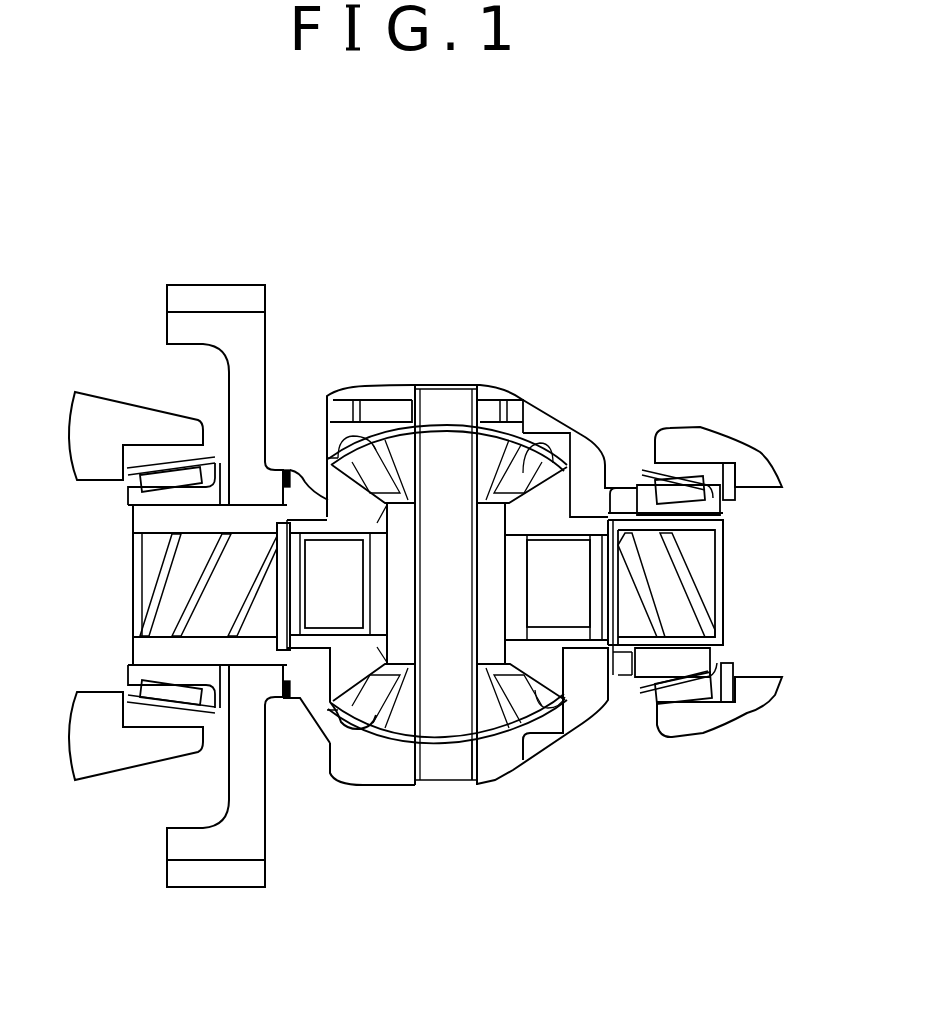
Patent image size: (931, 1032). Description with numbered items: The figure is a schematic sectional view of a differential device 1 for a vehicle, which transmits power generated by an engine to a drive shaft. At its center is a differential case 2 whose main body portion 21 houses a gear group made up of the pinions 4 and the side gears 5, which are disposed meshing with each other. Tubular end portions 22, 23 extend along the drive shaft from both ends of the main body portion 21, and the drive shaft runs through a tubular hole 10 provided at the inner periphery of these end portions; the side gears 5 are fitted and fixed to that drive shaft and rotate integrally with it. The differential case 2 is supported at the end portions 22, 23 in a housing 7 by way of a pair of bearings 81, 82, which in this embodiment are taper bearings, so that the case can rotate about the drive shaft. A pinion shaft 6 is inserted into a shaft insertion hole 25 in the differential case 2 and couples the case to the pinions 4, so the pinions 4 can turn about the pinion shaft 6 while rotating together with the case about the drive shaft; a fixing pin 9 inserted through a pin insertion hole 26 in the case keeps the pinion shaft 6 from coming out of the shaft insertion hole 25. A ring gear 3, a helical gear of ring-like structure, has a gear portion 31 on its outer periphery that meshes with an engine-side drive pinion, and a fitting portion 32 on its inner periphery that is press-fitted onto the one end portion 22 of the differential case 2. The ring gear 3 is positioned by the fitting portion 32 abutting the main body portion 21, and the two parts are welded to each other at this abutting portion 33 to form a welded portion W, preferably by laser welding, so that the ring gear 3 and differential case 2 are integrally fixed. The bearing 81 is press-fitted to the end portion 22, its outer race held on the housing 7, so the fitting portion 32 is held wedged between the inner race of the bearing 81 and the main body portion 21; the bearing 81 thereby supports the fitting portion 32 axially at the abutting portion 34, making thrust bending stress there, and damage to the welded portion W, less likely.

The differential device 1 is at (702, 338).
The differential case 2 is at (518, 388).
The ring gear 3 is at (172, 276).
The pinions 4 is at (398, 718).
The side gears 5 is at (343, 677).
The pinion shaft 6 is at (445, 768).
The housing 7 is at (116, 412).
The fixing pin 9 is at (392, 412).
The tubular hole 10 is at (155, 623).
The main body portion 21 is at (362, 405).
The end portion 22 is at (150, 521).
The end portion 23 is at (708, 530).
The shaft insertion hole 25 is at (472, 760).
The pin insertion hole 26 is at (352, 400).
The gear portion 31 is at (222, 300).
The fitting portion 32 is at (262, 480).
The abutting portion 33 is at (318, 472).
The abutting portion 34 is at (235, 506).
The bearing 81 is at (130, 493).
The bearing 82 is at (705, 506).
The welded portion W is at (290, 468).